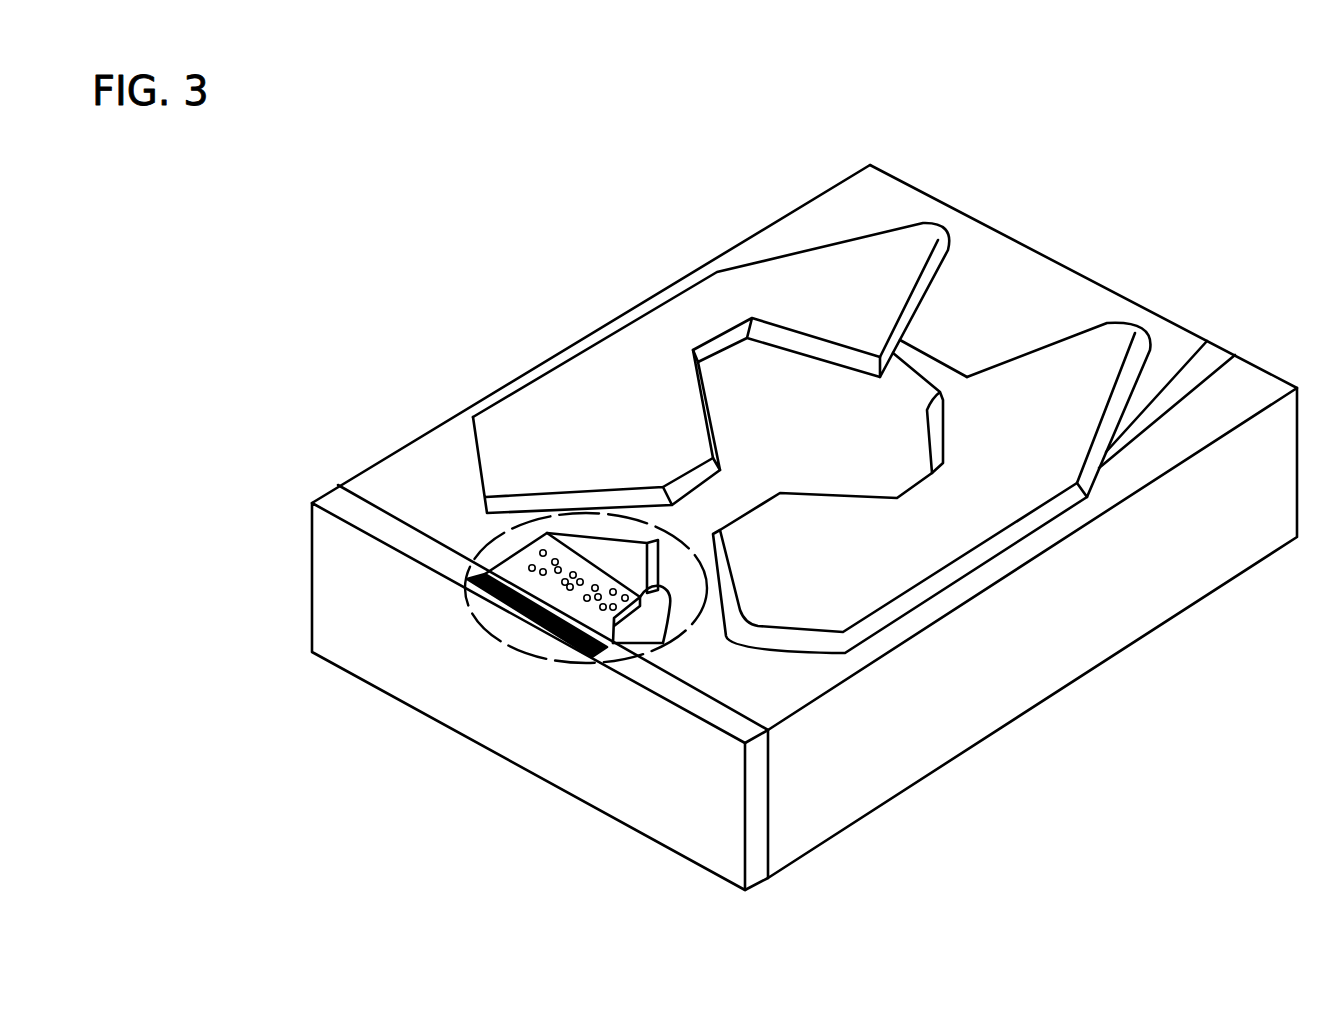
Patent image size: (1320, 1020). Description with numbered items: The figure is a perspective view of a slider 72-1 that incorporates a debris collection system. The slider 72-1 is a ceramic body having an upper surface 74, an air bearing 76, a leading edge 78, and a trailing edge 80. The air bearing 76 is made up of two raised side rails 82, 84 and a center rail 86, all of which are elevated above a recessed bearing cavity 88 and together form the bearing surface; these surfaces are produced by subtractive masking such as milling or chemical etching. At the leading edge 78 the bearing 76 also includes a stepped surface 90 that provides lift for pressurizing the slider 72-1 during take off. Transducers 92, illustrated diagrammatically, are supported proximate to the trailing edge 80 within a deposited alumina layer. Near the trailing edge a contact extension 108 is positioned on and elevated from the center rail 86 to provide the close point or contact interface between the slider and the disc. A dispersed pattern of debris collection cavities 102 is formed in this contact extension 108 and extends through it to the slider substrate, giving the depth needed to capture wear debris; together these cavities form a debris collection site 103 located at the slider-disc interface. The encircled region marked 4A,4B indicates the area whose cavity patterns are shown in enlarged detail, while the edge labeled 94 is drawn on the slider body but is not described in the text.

The slider 72-1 is at (1002, 188).
The upper surface 74 is at (1020, 715).
The air bearing 76 is at (1118, 354).
The leading edge 78 is at (1208, 338).
The trailing edge 80 is at (528, 695).
The raised side rail 82 is at (626, 441).
The raised side rail 84 is at (872, 581).
The center rail 86 is at (623, 550).
The recessed bearing cavity 88 is at (830, 448).
The stepped surface 90 is at (1023, 287).
The transducers 92 is at (490, 607).
The bottom corner edge 94 is at (768, 807).
The debris collection cavities 102 is at (615, 653).
The debris collection site 103 is at (665, 640).
The contact extension 108 is at (478, 558).
The section view indicator 4A,4B is at (605, 510).